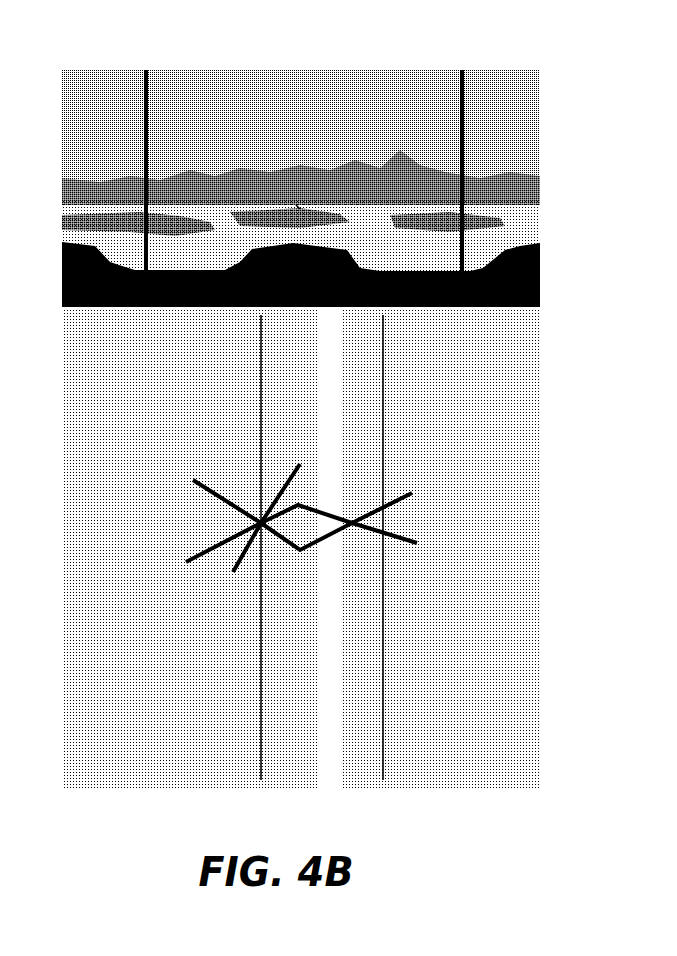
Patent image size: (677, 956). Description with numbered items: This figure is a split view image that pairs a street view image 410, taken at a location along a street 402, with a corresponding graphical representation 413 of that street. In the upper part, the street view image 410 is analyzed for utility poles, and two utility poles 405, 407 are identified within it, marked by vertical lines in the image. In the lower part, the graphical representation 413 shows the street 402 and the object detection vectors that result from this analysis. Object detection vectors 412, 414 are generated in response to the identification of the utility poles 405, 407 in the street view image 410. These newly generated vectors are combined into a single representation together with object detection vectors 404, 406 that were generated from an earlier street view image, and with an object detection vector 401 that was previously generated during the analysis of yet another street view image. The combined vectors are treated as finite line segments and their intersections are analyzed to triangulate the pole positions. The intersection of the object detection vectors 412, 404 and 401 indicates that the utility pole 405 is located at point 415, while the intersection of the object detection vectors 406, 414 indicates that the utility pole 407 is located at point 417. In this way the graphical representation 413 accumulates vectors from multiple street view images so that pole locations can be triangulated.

The object detection vector 401 is at (283, 483).
The street 402 is at (298, 207).
The object detection vector 404 is at (192, 562).
The utility pole 405 is at (463, 92).
The object detection vector 406 is at (403, 538).
The utility pole 407 is at (145, 88).
The street view image 410 is at (541, 100).
The object detection vector 412 is at (205, 493).
The graphical representation 413 is at (539, 345).
The object detection vector 414 is at (393, 495).
The point 415 is at (267, 533).
The point 417 is at (352, 528).